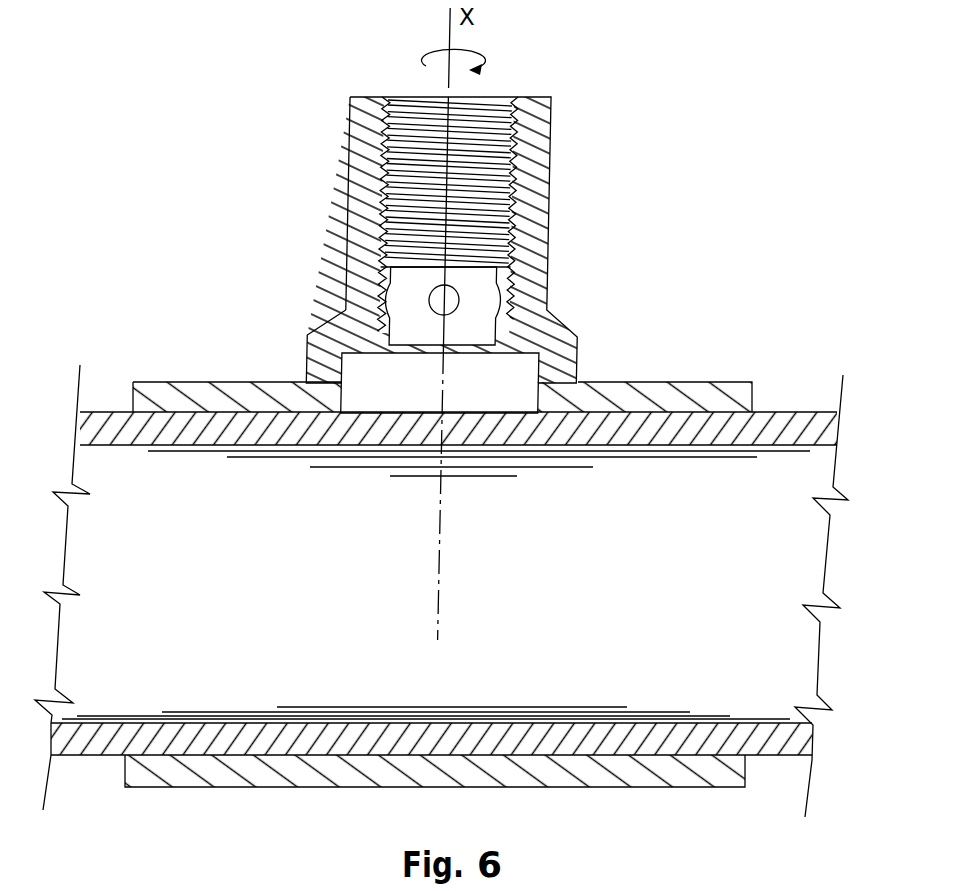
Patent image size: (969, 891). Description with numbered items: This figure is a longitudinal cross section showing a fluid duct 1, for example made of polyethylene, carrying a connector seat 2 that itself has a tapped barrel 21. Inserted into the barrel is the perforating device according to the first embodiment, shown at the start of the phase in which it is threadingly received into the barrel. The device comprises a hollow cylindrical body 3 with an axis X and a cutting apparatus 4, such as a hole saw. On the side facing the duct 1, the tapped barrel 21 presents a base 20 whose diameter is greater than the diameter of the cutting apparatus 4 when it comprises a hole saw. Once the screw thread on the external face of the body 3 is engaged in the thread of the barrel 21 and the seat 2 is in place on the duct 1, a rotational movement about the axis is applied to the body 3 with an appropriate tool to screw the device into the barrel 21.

The fluid duct 1 is at (816, 413).
The connector seat 2 is at (715, 385).
The hollow cylindrical body 3 is at (503, 89).
The cutting apparatus 4 is at (405, 333).
The base 20 is at (313, 361).
The tapped barrel 21 is at (343, 172).